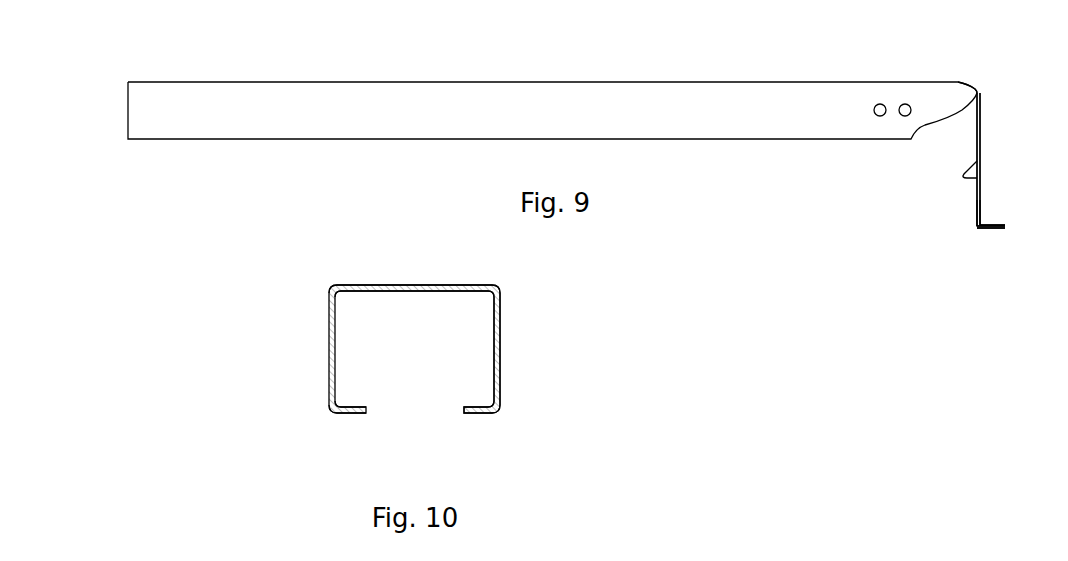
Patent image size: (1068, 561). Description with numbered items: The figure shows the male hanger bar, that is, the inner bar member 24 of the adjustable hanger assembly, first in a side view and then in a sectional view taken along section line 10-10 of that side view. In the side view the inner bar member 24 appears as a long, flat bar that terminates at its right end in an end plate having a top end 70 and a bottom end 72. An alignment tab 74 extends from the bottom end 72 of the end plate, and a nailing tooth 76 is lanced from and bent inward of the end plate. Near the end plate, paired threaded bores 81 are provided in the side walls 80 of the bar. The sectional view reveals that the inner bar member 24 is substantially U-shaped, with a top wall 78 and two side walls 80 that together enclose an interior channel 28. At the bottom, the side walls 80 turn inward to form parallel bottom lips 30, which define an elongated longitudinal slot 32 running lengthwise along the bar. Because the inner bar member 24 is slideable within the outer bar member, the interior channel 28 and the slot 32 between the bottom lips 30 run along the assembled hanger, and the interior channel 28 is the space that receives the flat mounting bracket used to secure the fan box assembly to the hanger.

In FIG. 9, the inner bar member 24 is at (95, 72).
In FIG. 10, the inner bar member 24 is at (282, 298).
In FIG. 9, the section line 10- 10 is at (295, 160).
In FIG. 9, the paired threaded bores 81 is at (880, 104).
In FIG. 9, the top end 70 is at (981, 89).
In FIG. 9, the nailing tooth 76 is at (963, 176).
In FIG. 9, the bottom end 72 is at (977, 229).
In FIG. 9, the alignment tab 74 is at (999, 231).
In FIG. 10, the top wall 78 is at (414, 289).
In FIG. 10, the side walls 80 is at (501, 327).
In FIG. 10, the bottom lips 30 is at (482, 411).
In FIG. 10, the elongated longitudinal slot 32 is at (414, 410).
In FIG. 10, the interior channel 28 is at (401, 356).